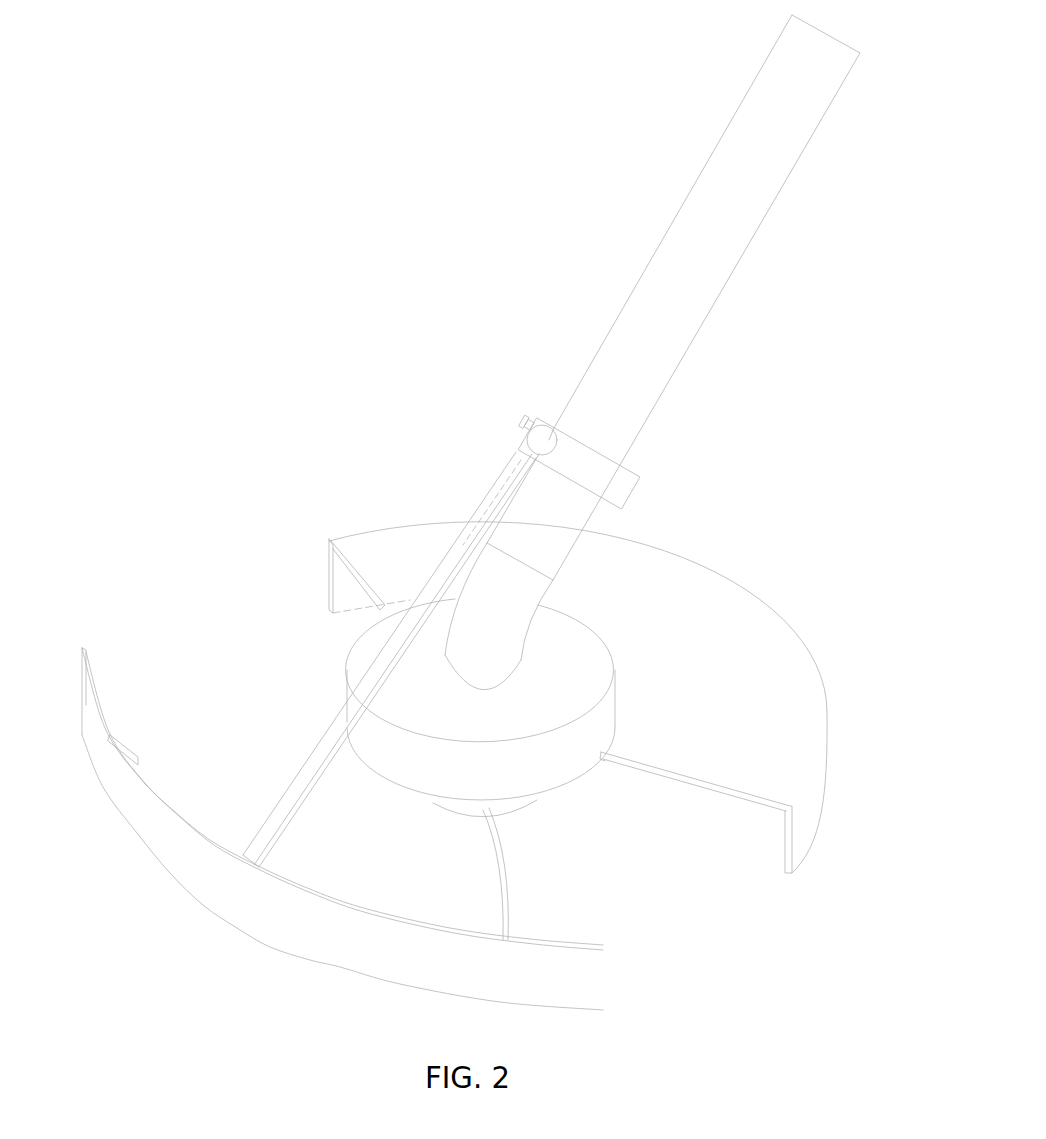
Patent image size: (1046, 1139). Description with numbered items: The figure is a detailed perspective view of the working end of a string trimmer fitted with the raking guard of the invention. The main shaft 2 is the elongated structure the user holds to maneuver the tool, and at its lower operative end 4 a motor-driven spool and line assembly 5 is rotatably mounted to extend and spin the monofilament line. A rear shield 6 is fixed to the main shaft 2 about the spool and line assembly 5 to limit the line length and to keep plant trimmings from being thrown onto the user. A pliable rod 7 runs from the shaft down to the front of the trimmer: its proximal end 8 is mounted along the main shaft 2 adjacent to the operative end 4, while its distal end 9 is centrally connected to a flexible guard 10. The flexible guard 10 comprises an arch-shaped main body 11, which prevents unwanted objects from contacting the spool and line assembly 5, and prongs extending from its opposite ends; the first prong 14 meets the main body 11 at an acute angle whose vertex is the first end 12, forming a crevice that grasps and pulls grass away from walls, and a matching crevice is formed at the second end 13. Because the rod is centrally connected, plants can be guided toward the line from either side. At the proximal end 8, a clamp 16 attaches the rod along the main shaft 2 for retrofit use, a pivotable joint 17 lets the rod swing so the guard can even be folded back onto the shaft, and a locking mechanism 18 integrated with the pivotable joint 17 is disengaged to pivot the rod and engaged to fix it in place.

The main shaft 2 is at (687, 196).
The operative end 4 is at (578, 377).
The spool and line assembly 5 is at (533, 797).
The rear shield 6 is at (793, 631).
The pliable rod 7 is at (335, 730).
The proximal end 8 is at (515, 455).
The distal end 9 is at (241, 849).
The flexible guard 10 is at (363, 819).
The main body 11 is at (226, 918).
The first end 12 is at (88, 650).
The second end 13 is at (610, 985).
The first prong 14 is at (128, 753).
The clamp 16 is at (632, 490).
The pivotable joint 17 is at (547, 427).
The locking mechanism 18 is at (518, 421).